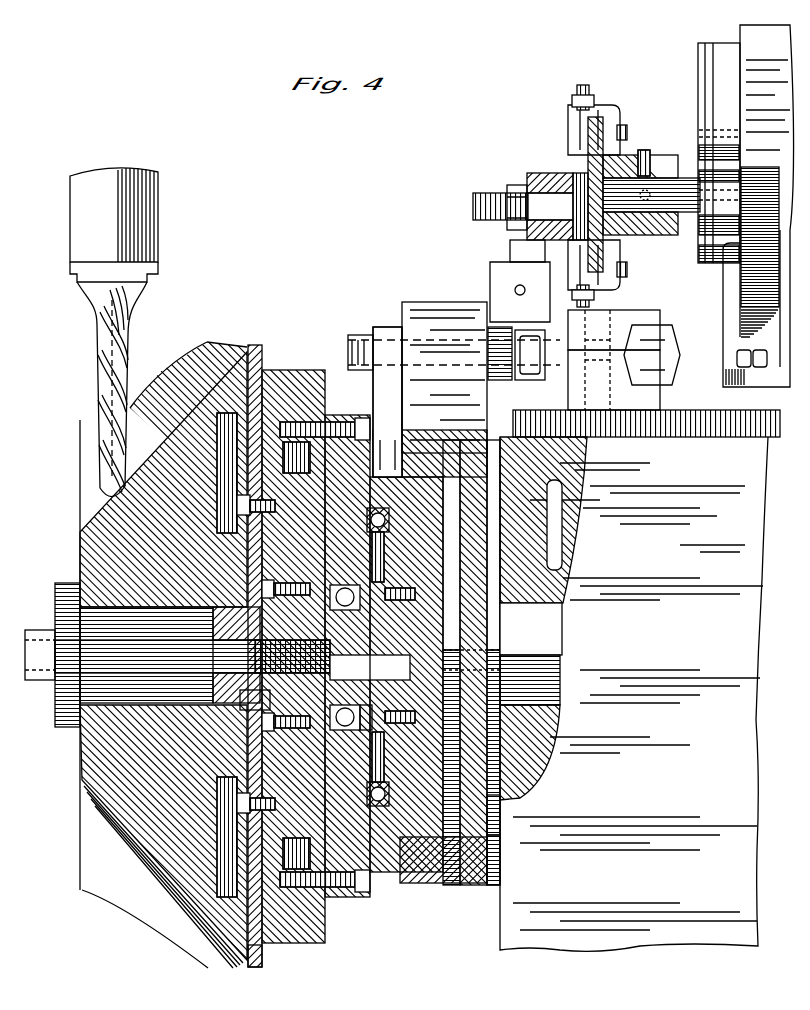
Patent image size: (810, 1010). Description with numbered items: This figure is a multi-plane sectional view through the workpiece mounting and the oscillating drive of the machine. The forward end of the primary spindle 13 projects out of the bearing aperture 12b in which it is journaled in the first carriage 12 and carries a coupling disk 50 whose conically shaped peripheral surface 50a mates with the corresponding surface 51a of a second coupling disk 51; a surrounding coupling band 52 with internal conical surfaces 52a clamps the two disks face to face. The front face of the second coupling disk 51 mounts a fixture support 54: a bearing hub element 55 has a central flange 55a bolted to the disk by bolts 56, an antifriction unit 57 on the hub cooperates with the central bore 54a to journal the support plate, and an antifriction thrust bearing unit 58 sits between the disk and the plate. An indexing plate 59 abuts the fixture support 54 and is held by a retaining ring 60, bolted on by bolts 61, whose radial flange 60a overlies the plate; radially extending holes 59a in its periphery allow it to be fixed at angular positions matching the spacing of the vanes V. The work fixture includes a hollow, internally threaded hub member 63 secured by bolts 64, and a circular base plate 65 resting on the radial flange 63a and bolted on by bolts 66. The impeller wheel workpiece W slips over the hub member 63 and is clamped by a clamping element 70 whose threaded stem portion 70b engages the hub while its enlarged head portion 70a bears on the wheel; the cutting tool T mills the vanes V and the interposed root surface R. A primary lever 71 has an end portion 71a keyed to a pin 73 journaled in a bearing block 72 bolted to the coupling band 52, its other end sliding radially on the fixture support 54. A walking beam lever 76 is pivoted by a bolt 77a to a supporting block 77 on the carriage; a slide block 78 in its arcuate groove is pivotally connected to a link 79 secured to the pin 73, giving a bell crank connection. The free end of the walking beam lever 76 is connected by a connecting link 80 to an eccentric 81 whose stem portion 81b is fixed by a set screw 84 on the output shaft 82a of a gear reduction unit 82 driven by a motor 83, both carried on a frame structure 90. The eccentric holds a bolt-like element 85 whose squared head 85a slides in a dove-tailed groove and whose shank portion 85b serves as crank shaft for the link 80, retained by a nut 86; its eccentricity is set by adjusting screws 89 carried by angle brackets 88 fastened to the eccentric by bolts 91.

The cutting tool T is at (128, 342).
The vanes V is at (80, 428).
The impeller wheel workpiece W is at (80, 548).
The root surface R is at (213, 385).
The first carriage 12 is at (500, 944).
The bearing aperture 12b is at (552, 600).
The primary spindle 13 is at (545, 642).
The coupling disk 50 is at (500, 820).
The conically shaped peripheral surface 50a is at (500, 855).
The second coupling disk 51 is at (400, 805).
The conically shaped peripheral surface 51a is at (415, 450).
The coupling band 52 is at (470, 445).
The internal conical surfaces 52a is at (440, 865).
The fixture support 54 is at (330, 416).
The central bore 54a is at (268, 668).
The bearing hub element 55 is at (358, 686).
The central flange 55a is at (400, 735).
The bolts 56 is at (415, 594).
The antifriction unit 57 is at (346, 608).
The antifriction thrust bearing unit 58 is at (385, 520).
The indexing plate 59 is at (318, 880).
The radially extending holes 59a is at (298, 442).
The retaining ring 60 is at (260, 352).
The inwardly projecting radial flange 60a is at (218, 440).
The bolts 61 is at (362, 418).
The hub member 63 is at (213, 685).
The radial flange 63a is at (262, 700).
The bolts 64 is at (262, 590).
The circular base plate 65 is at (254, 966).
The bolts 66 is at (237, 506).
The bolt-like clamping element 70 is at (52, 690).
The enlarged head portion 70a is at (62, 728).
The threaded stem portion 70b is at (88, 662).
The primary lever 71 is at (385, 430).
The end portion 71a is at (386, 327).
The bearing block 72 is at (428, 308).
The pin 73 is at (364, 335).
The walking beam lever 76 is at (560, 380).
The supporting block 77 is at (612, 312).
The bolt 77a is at (675, 330).
The slide block 78 is at (528, 378).
The link 79 is at (500, 327).
The connecting link 80 is at (522, 268).
The eccentric 81 is at (576, 148).
The stem portion 81b is at (646, 150).
The gear reduction unit 82 is at (726, 52).
The output shaft 82a is at (683, 178).
The motor 83 is at (766, 52).
The set screw 84 is at (642, 158).
The bolt-like element 85 is at (570, 190).
The squared head 85a is at (572, 170).
The shank portion 85b is at (482, 193).
The nut 86 is at (512, 190).
The angle brackets 88 is at (602, 106).
The adjusting screws 89 is at (584, 86).
The frame structure 90 is at (686, 412).
The bolts 91 is at (624, 125).